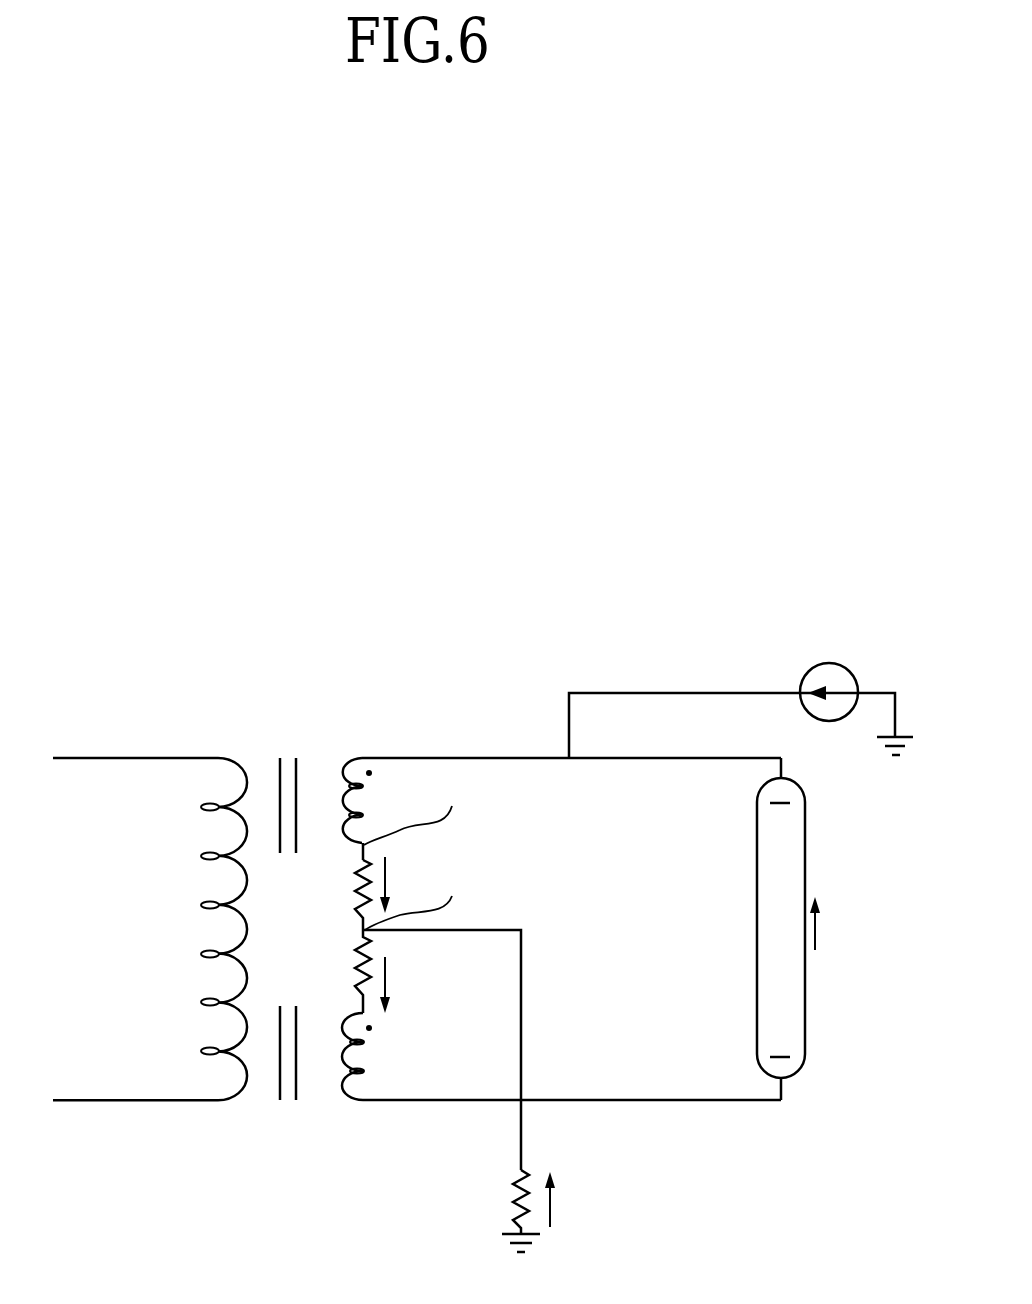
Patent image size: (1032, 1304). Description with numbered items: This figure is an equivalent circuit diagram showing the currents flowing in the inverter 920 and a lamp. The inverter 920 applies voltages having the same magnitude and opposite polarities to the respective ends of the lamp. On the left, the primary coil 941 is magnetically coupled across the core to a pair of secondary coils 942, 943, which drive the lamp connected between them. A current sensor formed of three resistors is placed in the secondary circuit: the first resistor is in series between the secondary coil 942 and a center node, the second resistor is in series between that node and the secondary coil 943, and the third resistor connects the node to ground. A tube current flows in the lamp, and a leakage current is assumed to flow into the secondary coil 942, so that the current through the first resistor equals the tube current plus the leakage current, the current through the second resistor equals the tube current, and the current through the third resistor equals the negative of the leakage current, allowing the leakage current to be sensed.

The inverter 920 is at (502, 575).
The primary coil 941 is at (218, 757).
The secondary coil 942 is at (361, 757).
The secondary coil 943 is at (357, 1104).